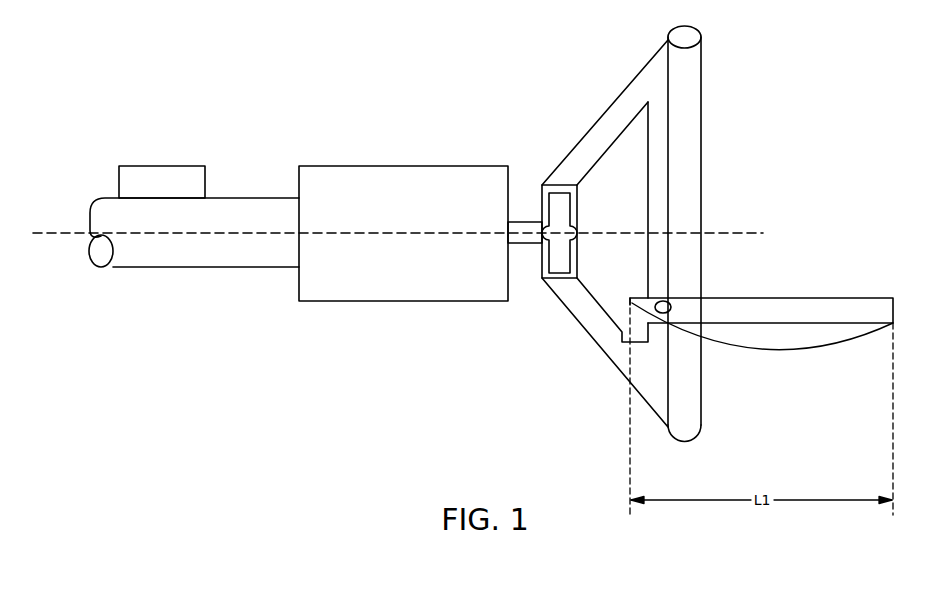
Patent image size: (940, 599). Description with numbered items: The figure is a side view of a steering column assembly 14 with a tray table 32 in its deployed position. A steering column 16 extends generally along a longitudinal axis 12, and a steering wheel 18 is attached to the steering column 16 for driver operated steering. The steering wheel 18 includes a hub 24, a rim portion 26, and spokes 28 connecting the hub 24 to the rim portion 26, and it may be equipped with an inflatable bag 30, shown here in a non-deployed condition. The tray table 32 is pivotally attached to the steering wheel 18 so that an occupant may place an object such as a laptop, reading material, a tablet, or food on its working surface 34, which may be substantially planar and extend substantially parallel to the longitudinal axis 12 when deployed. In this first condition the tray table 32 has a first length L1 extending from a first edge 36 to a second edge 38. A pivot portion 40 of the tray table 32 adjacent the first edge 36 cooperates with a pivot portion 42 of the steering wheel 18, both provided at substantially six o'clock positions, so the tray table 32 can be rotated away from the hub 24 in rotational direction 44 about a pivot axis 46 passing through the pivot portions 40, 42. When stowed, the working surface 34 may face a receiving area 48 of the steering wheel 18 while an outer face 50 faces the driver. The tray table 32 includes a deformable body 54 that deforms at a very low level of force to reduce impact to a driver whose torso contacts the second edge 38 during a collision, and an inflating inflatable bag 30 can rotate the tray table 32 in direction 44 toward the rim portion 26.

The longitudinal axis 12 is at (58, 231).
The steering column assembly 14 is at (318, 66).
The steering column 16 is at (205, 276).
The steering wheel 18 is at (702, 34).
The hub 24 is at (578, 207).
The rim portion 26 is at (697, 414).
The spokes 28 is at (593, 130).
The inflatable bag 30 is at (552, 192).
The tray table 32 is at (760, 269).
The working surface 34 is at (815, 297).
The first edge 36 is at (630, 290).
The second edge 38 is at (886, 308).
The pivot portion 40 is at (645, 312).
The pivot portion 42 is at (652, 287).
The rotational direction 44 is at (790, 73).
The pivot axis 46 is at (663, 315).
The receiving area 48 is at (630, 143).
The outer face 50 is at (777, 350).
The deformable body 54 is at (808, 322).